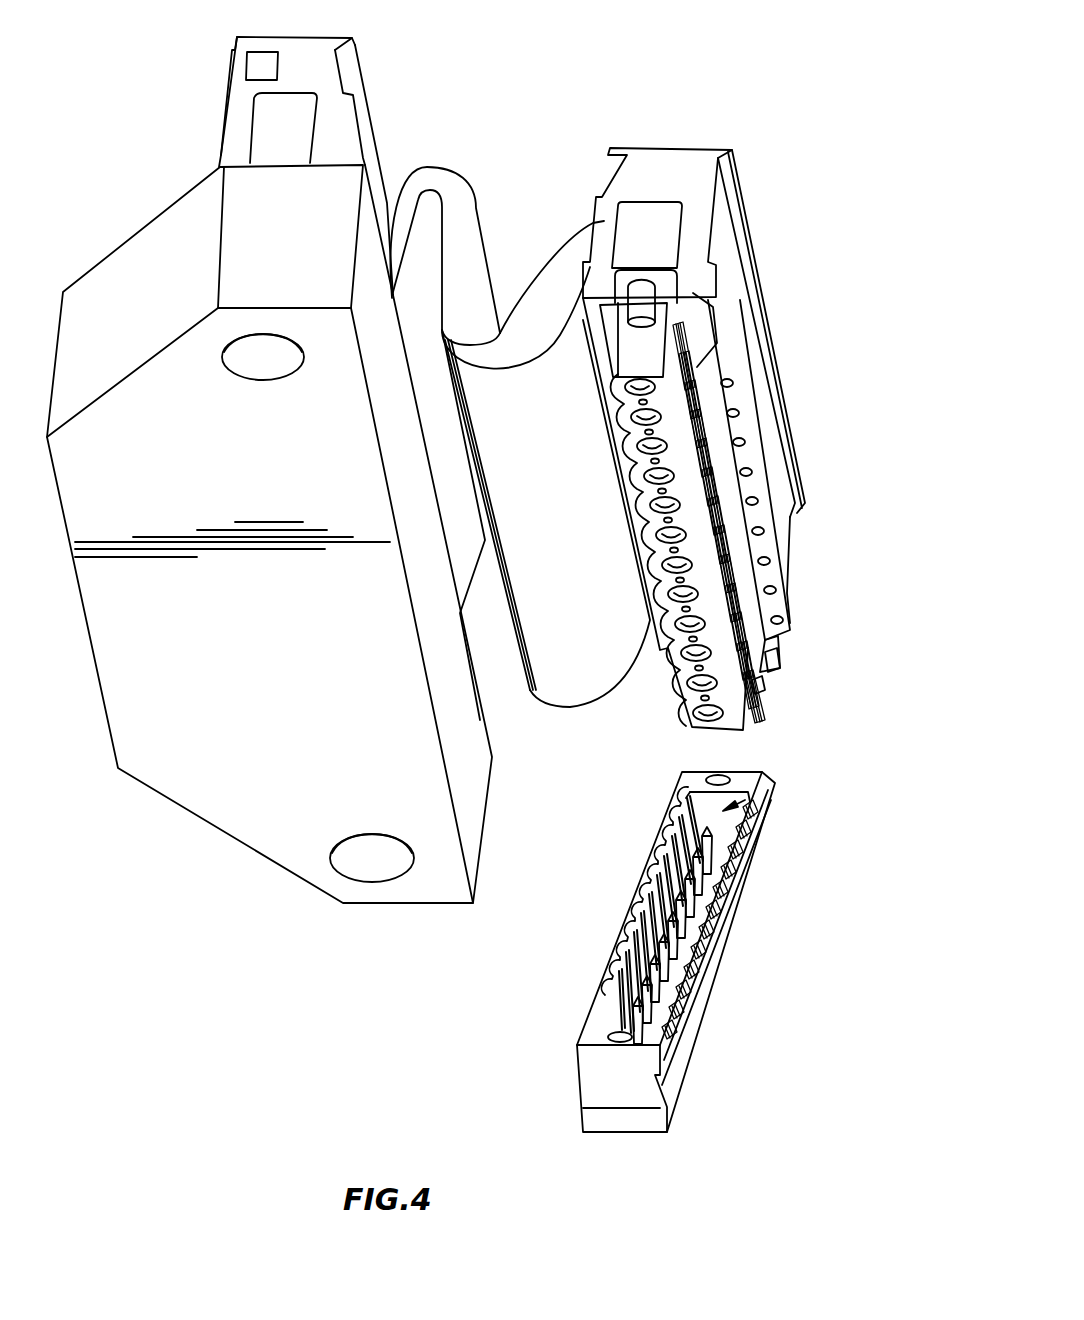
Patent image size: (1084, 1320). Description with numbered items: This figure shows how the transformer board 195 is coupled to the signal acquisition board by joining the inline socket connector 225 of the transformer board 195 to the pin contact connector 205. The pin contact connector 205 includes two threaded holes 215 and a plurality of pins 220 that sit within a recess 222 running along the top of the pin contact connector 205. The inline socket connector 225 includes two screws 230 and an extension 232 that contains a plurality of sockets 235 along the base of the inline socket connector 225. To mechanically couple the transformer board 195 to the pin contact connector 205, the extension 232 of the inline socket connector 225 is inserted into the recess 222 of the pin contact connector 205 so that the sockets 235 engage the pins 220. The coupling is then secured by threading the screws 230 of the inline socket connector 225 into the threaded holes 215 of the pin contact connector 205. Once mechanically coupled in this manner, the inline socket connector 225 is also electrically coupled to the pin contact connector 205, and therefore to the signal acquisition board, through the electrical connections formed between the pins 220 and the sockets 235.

The transformer board 195 is at (485, 178).
The pin contact connector 205 is at (642, 1120).
The threaded holes 215 is at (728, 774).
The pins 220 is at (705, 893).
The recess 222 is at (770, 790).
The inline socket connector 225 is at (680, 167).
The screws 230 is at (640, 308).
The extension 232 is at (645, 360).
The sockets 235 is at (753, 687).